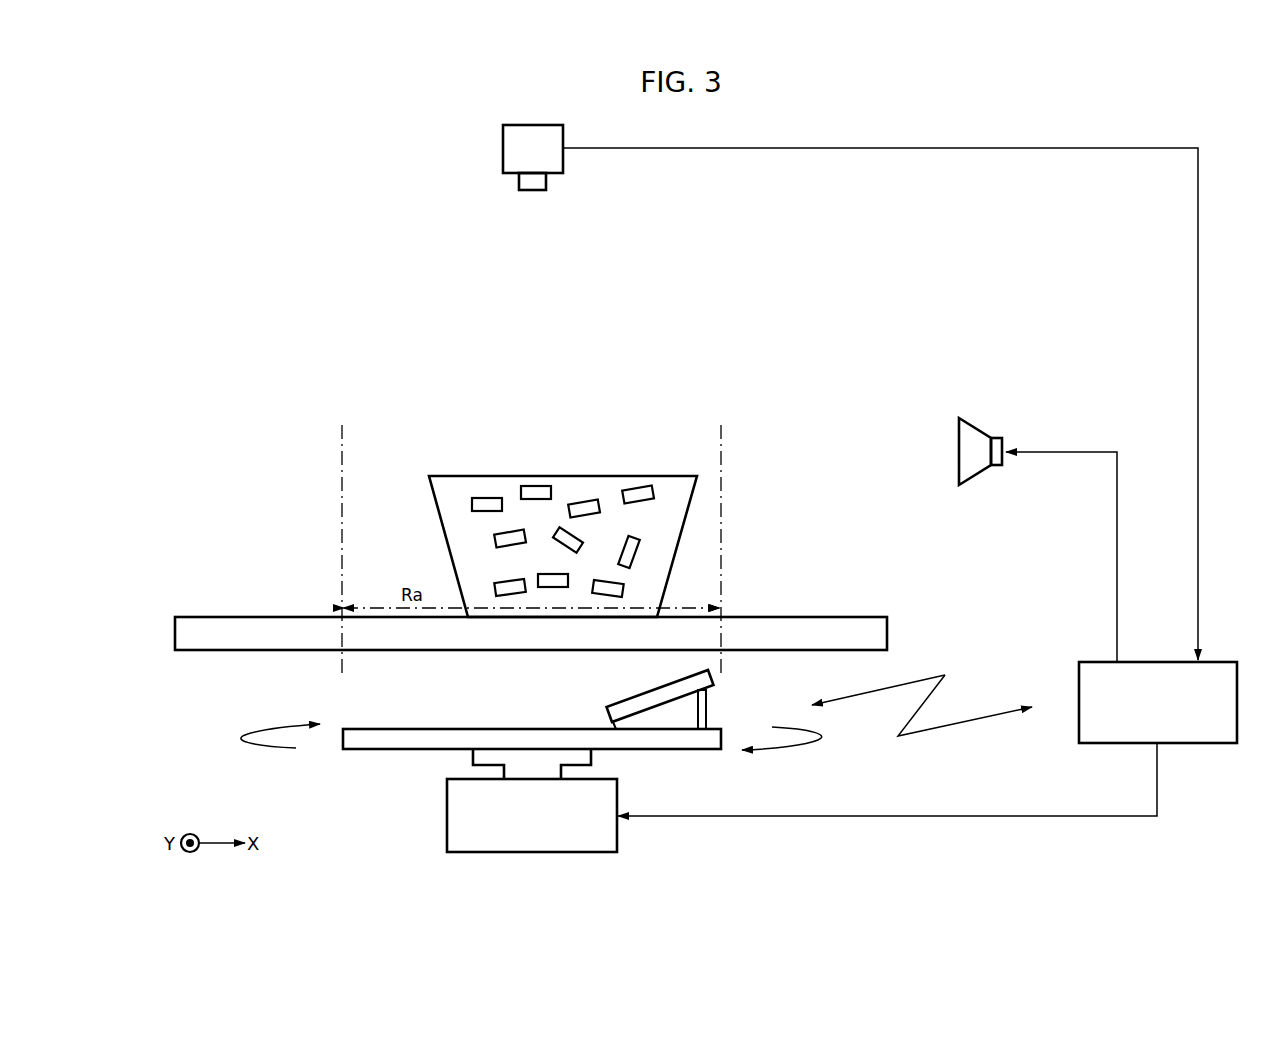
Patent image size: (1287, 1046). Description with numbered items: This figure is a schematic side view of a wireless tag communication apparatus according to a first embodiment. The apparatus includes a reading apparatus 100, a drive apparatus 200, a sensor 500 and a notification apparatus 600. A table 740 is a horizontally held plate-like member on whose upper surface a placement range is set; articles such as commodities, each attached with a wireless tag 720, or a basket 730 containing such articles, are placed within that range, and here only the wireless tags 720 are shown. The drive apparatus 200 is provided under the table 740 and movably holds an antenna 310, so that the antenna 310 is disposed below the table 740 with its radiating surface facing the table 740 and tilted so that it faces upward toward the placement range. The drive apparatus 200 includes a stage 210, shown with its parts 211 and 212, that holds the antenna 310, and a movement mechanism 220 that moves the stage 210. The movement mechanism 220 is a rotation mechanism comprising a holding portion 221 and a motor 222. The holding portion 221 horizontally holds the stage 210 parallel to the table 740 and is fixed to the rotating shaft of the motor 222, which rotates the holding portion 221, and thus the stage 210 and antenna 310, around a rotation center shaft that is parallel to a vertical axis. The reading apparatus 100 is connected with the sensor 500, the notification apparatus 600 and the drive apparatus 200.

The reading apparatus 100 is at (1222, 662).
The drive apparatus 200 is at (277, 783).
The stage 210 is at (583, 704).
The stage 211 is at (711, 736).
The support post 212 is at (706, 708).
The movement mechanism 220 is at (474, 800).
The holding portion 221 is at (473, 757).
The motor 222 is at (460, 808).
The antenna 310 is at (644, 697).
The sensor 500 is at (503, 148).
The notification apparatus 600 is at (972, 425).
The wireless tag 720 is at (535, 486).
The basket 730 is at (440, 525).
The table 740 is at (818, 617).